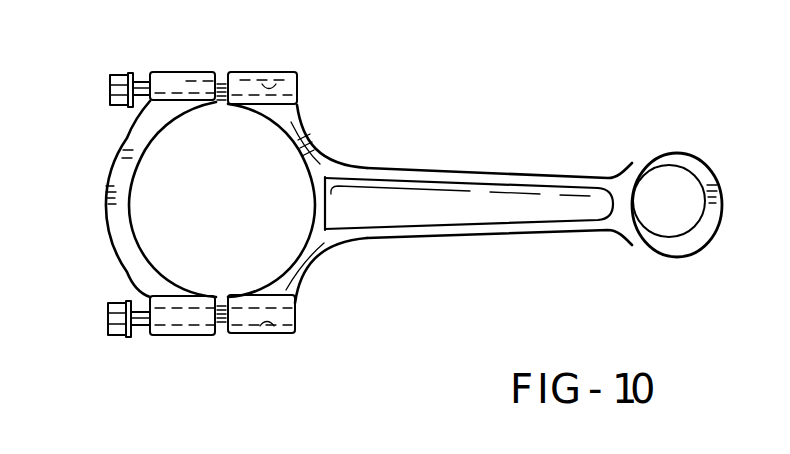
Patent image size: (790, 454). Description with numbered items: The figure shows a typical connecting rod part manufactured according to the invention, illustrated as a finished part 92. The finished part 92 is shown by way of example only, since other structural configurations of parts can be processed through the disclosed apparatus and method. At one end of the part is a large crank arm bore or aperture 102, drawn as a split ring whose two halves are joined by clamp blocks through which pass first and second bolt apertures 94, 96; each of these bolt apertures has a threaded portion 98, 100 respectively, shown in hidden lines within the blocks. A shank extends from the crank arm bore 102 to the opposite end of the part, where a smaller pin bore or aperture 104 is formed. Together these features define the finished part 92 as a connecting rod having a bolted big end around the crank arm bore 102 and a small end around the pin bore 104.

The finished part 92 is at (478, 171).
The first bolt aperture 94 is at (184, 80).
The second bolt aperture 96 is at (192, 326).
The threaded portion 98 is at (288, 74).
The threaded portion 100 is at (276, 334).
The crank arm bore 102 is at (142, 166).
The pin bore 104 is at (668, 172).